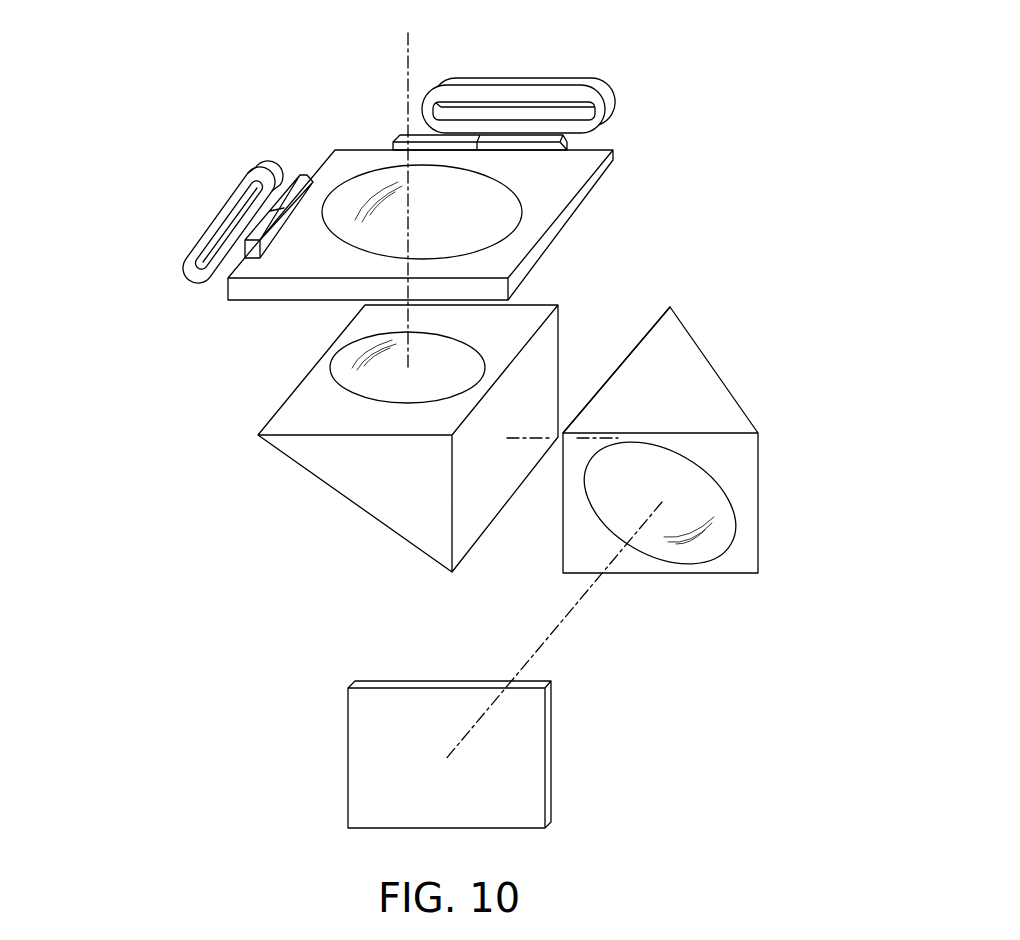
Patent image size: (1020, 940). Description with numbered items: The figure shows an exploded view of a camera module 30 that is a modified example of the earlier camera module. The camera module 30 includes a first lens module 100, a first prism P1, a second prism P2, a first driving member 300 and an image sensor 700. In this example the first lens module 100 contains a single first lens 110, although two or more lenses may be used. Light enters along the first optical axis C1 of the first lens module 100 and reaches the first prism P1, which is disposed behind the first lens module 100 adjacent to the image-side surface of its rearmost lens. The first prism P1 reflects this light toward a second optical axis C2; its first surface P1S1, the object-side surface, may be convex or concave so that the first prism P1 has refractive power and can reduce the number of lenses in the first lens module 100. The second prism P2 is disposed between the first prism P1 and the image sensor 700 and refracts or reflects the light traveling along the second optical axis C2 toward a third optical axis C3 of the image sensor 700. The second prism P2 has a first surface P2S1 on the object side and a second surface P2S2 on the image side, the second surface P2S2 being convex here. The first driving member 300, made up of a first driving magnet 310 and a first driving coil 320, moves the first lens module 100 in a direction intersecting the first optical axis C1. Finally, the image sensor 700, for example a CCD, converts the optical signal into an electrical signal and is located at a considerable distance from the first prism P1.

The camera module 30 is at (740, 174).
The first lens module 100 is at (613, 167).
The first lens 110 is at (515, 210).
The first driving member 300 is at (175, 262).
The first driving magnet 310 is at (258, 250).
The first driving coil 320 is at (193, 263).
The image sensor 700 is at (552, 748).
The first prism P1 is at (378, 500).
The first surface of the first prism P1S1 is at (378, 387).
The second prism P2 is at (727, 388).
The first surface of the second prism P2S1 is at (637, 343).
The second surface of the second prism P2S2 is at (700, 485).
The first optical axis C1 is at (407, 190).
The second optical axis C2 is at (527, 438).
The third optical axis C3 is at (563, 618).